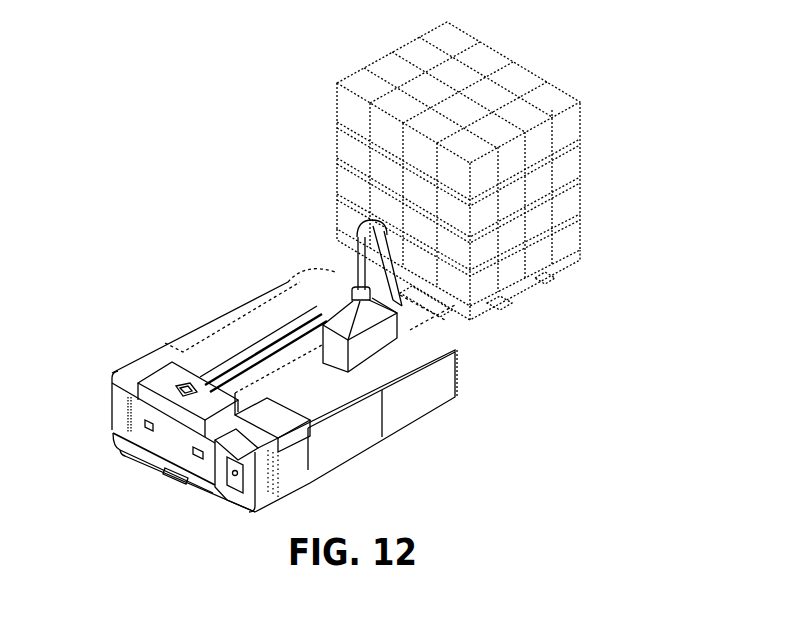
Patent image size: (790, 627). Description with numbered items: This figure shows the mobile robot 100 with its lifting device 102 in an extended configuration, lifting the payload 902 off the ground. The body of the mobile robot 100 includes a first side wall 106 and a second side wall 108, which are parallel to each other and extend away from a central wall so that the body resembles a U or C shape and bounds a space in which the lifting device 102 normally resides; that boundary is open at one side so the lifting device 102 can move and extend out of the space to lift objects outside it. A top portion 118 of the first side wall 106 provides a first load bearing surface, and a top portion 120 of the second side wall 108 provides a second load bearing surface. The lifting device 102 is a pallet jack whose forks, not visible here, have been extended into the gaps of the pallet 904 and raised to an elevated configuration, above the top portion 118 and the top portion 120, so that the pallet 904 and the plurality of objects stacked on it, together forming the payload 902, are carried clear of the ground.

The mobile robot 100 is at (132, 287).
The lifting device 102 is at (340, 317).
The first side wall 106 is at (212, 332).
The second side wall 108 is at (417, 398).
The top portion of the first side wall 118 is at (273, 331).
The top portion of the second side wall 120 is at (363, 397).
The payload 902 is at (582, 153).
The pallet 904 is at (548, 272).